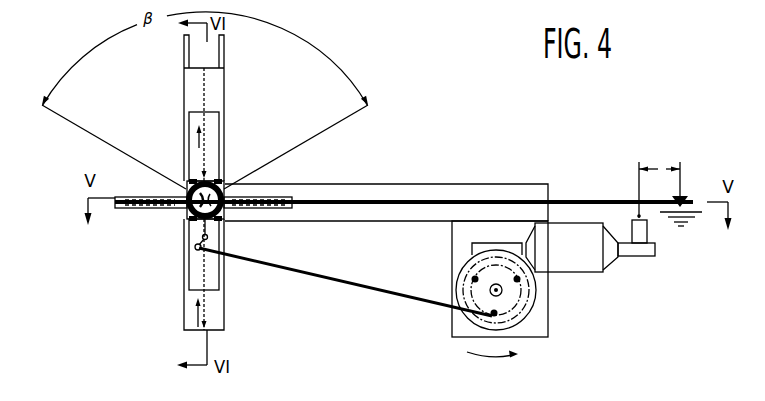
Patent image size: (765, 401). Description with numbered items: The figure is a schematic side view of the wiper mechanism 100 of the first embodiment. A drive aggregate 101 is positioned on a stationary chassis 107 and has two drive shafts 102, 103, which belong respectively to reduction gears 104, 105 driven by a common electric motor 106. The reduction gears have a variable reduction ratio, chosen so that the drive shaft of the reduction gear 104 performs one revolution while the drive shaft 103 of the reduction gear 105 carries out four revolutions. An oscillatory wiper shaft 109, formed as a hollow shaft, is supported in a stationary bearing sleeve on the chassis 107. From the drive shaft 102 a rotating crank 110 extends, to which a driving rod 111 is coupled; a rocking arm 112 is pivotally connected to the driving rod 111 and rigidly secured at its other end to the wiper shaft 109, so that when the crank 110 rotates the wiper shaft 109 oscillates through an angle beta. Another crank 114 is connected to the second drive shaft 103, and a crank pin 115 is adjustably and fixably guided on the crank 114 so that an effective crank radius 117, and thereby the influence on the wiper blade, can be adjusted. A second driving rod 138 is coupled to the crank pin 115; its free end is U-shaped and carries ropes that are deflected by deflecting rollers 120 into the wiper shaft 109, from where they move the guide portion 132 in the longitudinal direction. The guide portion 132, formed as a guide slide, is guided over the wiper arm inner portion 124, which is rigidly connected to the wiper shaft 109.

The wiper mechanism 100 is at (367, 313).
The drive aggregate 101 is at (592, 290).
The drive shaft 102 is at (498, 296).
The drive shaft 103 is at (646, 223).
The reduction gear 104 is at (525, 311).
The reduction gear 105 is at (638, 256).
The electric motor 106 is at (562, 262).
The stationary chassis 107 is at (461, 193).
The wiper shaft 109 is at (226, 186).
The crank 110 is at (484, 303).
The driving rod 111 is at (343, 279).
The rocking arm 112 is at (196, 240).
The crank 114 is at (648, 218).
The crank pin 115 is at (682, 196).
The effective crank radius 117 is at (662, 170).
The deflecting rollers 120 is at (238, 196).
The wiper arm inner portion 124 is at (213, 277).
The guide portion 132 is at (215, 80).
The second driving rod 138 is at (550, 184).